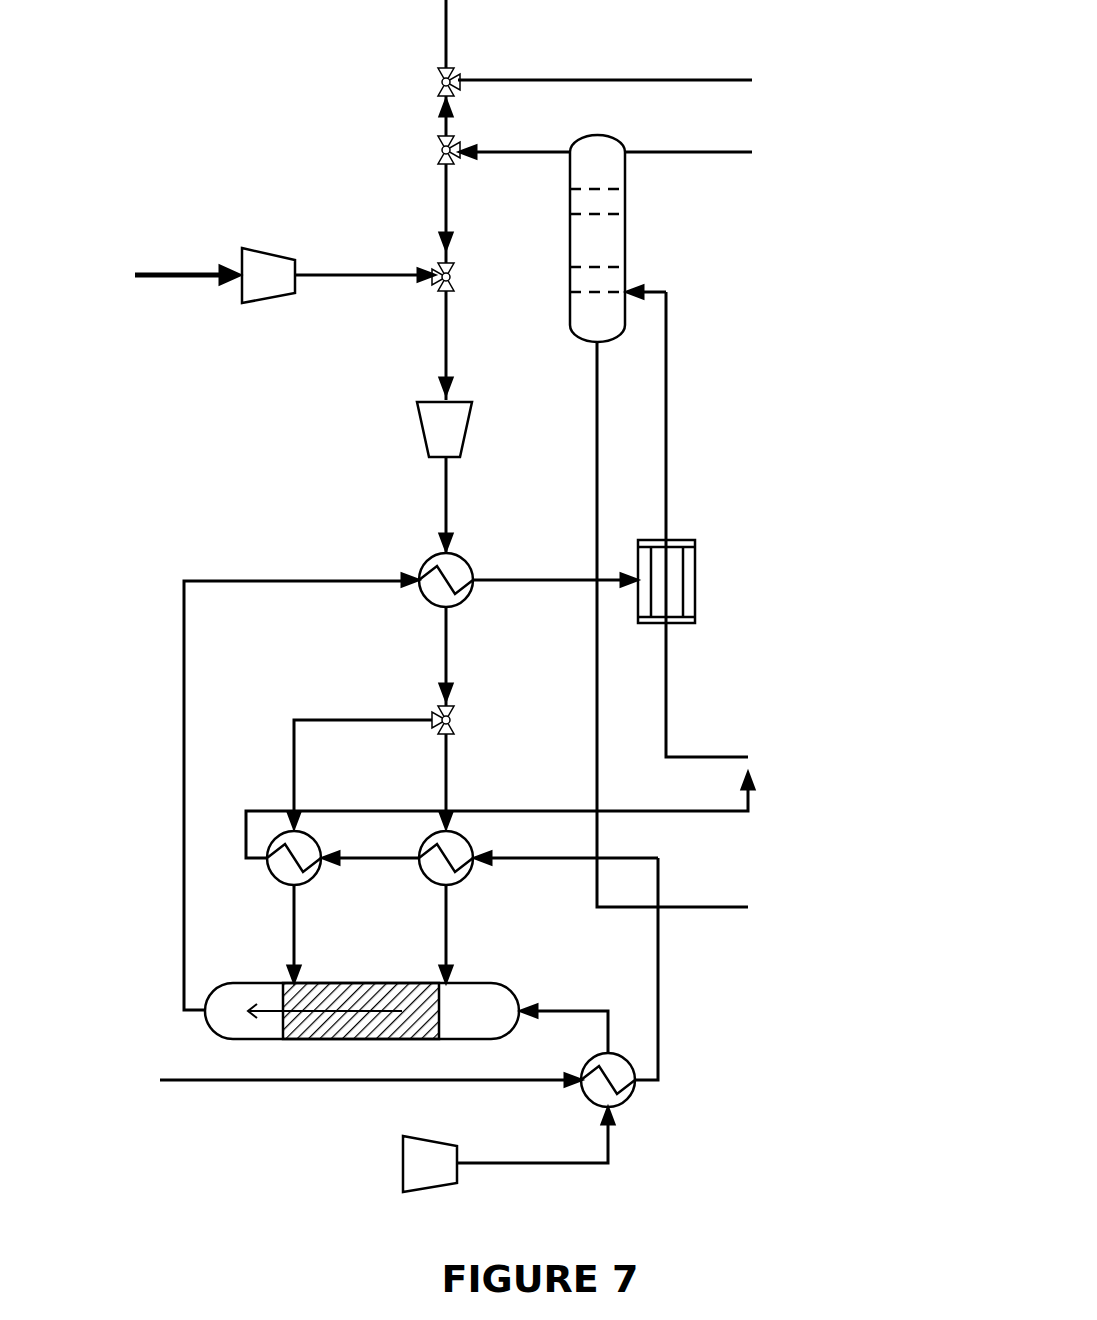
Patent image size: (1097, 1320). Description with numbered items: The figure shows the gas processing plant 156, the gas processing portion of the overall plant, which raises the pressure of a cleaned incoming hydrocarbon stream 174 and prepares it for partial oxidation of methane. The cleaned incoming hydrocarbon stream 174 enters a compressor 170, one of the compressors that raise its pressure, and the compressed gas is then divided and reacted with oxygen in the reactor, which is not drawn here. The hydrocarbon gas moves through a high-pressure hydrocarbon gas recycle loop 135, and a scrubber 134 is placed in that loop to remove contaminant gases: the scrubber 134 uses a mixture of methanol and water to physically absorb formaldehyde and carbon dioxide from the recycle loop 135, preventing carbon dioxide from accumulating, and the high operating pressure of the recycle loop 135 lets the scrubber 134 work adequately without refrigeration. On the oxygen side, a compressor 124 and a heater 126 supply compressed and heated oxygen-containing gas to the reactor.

The gas processing plant 156 is at (252, 54).
The cleaned incoming hydrocarbon stream 174 is at (187, 263).
The compressor 170 is at (285, 287).
The hydrocarbon gas recycle loop 135 is at (420, 213).
The scrubber 134 is at (618, 252).
The heater 126 is at (648, 1067).
The compressor 124 is at (410, 1160).